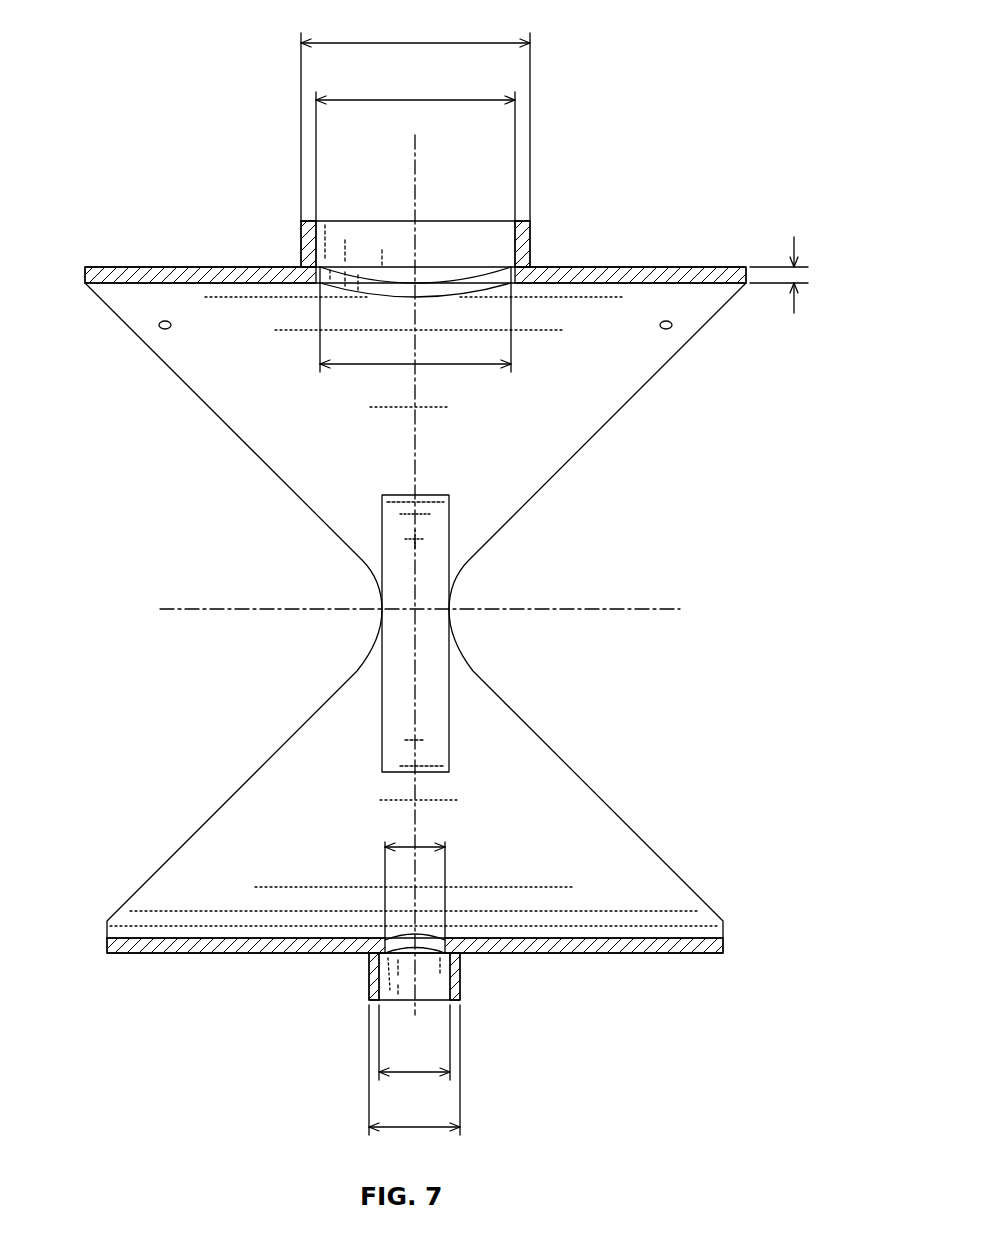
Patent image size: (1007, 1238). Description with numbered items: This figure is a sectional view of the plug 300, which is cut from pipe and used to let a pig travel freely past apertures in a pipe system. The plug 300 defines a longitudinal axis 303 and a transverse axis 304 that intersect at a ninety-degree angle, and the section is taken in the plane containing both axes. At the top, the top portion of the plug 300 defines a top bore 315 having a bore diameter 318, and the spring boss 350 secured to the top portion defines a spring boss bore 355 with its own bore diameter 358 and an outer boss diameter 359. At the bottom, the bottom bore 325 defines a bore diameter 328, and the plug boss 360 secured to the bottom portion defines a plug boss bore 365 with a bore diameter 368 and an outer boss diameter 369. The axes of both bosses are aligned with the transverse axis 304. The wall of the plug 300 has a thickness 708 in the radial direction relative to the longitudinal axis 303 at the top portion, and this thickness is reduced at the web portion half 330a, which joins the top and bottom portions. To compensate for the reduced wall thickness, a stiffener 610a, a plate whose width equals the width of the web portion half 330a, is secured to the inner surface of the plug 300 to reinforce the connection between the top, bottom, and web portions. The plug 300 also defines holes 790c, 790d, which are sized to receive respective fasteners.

The plug 300 is at (605, 90).
The longitudinal axis 303 is at (597, 612).
The transverse axis 304 is at (415, 442).
The top bore 315 is at (395, 290).
The bore diameter 318 is at (458, 370).
The bottom bore 325 is at (433, 945).
The bore diameter 328 is at (445, 847).
The web portion half 330a is at (370, 572).
The spring boss 350 is at (530, 226).
The spring boss bore 355 is at (453, 237).
The bore diameter 358 is at (435, 100).
The outer boss diameter 359 is at (372, 42).
The plug boss 360 is at (462, 978).
The plug boss bore 365 is at (385, 985).
The bore diameter 368 is at (415, 1075).
The outer boss diameter 369 is at (415, 1130).
The stiffener 610a is at (438, 548).
The thickness 708 is at (805, 277).
The hole 790c is at (165, 330).
The hole 790d is at (666, 330).